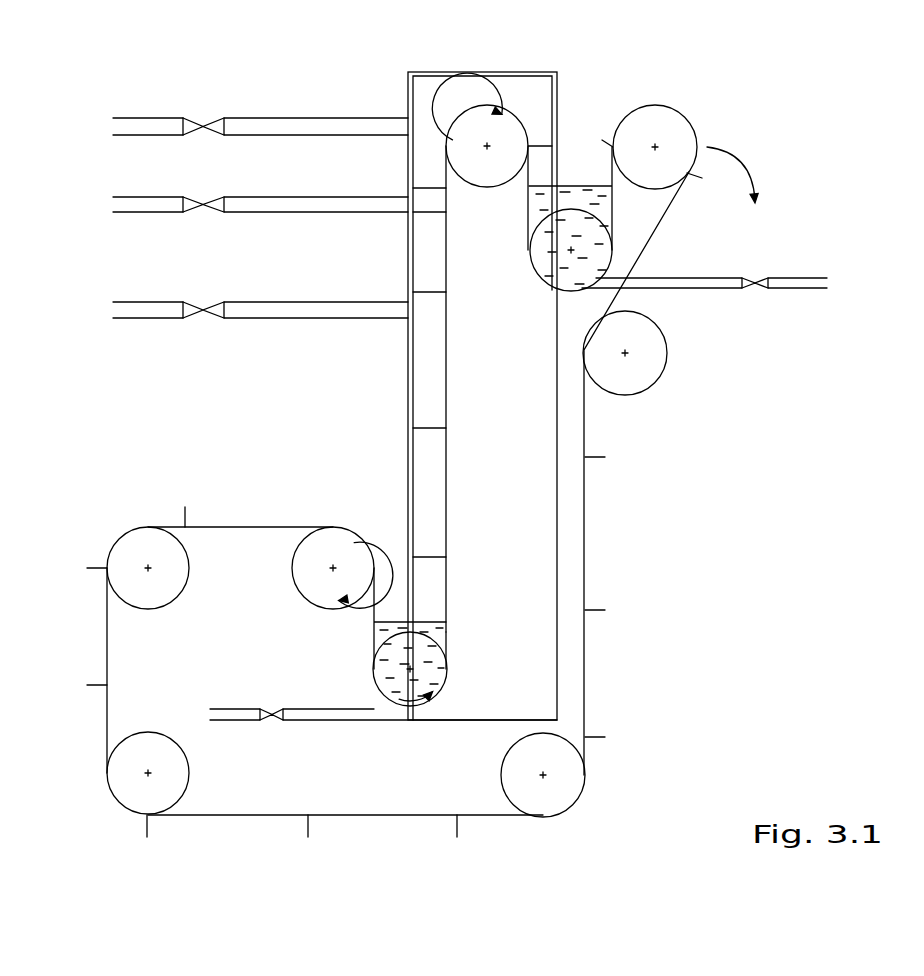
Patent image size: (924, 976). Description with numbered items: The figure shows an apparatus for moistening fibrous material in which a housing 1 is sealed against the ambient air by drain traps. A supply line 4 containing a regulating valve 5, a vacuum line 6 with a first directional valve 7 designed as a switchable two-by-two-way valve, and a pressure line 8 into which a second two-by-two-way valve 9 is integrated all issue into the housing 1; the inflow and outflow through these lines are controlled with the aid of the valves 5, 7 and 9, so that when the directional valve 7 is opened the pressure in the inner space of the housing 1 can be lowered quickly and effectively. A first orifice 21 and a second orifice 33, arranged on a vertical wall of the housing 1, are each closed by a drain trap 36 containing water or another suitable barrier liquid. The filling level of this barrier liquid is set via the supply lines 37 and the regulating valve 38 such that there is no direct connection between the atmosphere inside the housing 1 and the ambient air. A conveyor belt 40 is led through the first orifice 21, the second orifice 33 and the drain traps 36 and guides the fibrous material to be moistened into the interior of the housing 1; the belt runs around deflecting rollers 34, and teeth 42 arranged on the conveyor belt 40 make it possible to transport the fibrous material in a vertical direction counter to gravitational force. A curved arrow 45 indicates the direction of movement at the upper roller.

The housing 1 is at (408, 403).
The supply line 4 is at (153, 317).
The regulating valve 5 is at (200, 305).
The vacuum line 6 is at (150, 213).
The first directional valve 7 is at (203, 197).
The pressure line 8 is at (143, 136).
The second 2/2-way valve 9 is at (200, 122).
The first orifice 21 is at (408, 633).
The second orifice 33 is at (557, 198).
The deflecting rollers 34 is at (687, 117).
The drain trap 36 is at (543, 281).
The supply lines 37 is at (810, 292).
The regulating valve 38 is at (748, 292).
The conveyor belt 40 is at (585, 563).
The teeth 42 is at (308, 527).
The rotation direction arrow 45 is at (748, 165).